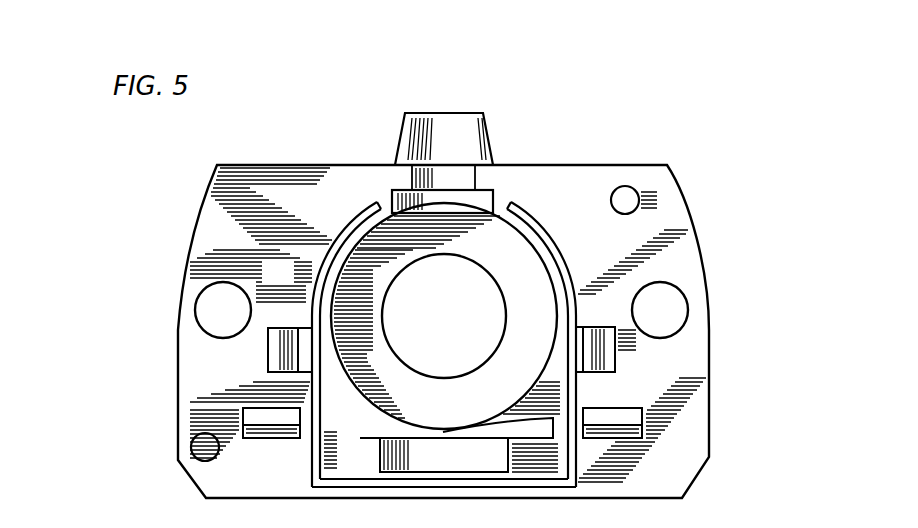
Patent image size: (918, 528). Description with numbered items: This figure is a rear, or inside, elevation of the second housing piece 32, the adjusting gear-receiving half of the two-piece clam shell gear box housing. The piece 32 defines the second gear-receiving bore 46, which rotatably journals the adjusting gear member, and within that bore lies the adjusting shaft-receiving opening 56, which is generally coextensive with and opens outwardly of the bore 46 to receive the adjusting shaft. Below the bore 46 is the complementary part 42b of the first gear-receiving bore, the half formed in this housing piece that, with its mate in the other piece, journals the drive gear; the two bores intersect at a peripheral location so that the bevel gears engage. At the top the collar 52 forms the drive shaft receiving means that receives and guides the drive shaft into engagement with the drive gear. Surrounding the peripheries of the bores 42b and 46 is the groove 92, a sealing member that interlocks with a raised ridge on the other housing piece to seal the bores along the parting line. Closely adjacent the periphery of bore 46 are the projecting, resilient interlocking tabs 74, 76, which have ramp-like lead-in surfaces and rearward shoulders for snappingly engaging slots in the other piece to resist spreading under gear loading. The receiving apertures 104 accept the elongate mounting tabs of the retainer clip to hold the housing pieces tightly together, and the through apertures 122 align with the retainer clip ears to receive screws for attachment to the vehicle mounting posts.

The second housing piece 32 is at (186, 236).
The collar 52 is at (441, 111).
The groove 92 is at (340, 238).
The second gear-receiving bore 46 is at (482, 242).
The adjusting shaft-receiving opening 56 is at (463, 374).
The tab 74 is at (285, 330).
The tab 76 is at (599, 330).
The through aperture 122 is at (205, 320).
The receiving aperture 104 is at (255, 415).
The complementary part of first gear-receiving bore 42b is at (506, 459).